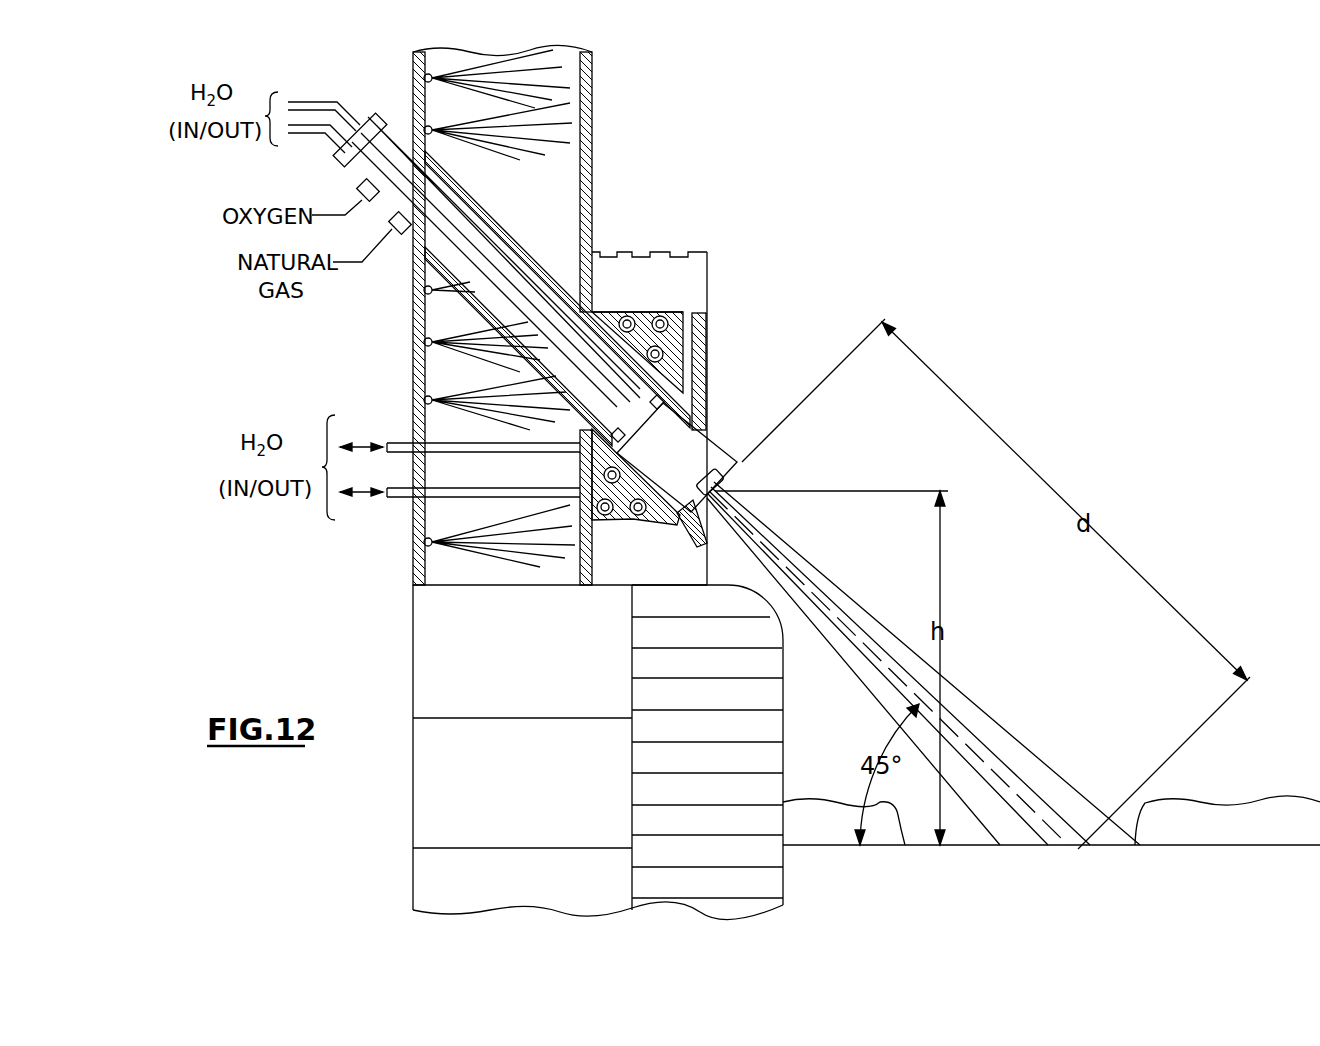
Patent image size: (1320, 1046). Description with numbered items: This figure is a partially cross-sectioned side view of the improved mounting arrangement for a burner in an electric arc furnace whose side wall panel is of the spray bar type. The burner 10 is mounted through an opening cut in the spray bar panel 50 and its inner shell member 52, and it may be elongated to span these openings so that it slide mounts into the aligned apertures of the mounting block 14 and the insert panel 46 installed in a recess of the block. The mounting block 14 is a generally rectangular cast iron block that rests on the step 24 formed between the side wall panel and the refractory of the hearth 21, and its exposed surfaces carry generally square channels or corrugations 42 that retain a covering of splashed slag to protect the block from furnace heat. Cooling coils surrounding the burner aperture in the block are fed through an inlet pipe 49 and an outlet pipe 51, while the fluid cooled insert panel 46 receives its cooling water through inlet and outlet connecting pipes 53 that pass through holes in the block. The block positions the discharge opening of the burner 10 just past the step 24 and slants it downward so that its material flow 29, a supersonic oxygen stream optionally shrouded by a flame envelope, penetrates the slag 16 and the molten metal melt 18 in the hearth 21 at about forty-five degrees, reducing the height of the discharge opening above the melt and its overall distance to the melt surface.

The burner 10 is at (708, 445).
The mounting block 14 is at (708, 282).
The slag 16 is at (840, 800).
The molten metal melt 18 is at (900, 848).
The hearth 21 is at (772, 712).
The step 24 is at (620, 588).
The material flow 29 is at (790, 533).
The channels or corrugations 42 is at (605, 255).
The insert panel 46 is at (708, 348).
The inlet pipe 49 is at (413, 378).
The spray bar panel 50 is at (413, 302).
The outlet pipe 51 is at (497, 403).
The inner shell member 52 is at (594, 160).
The inlet and outlet connecting pipes 53 is at (413, 525).